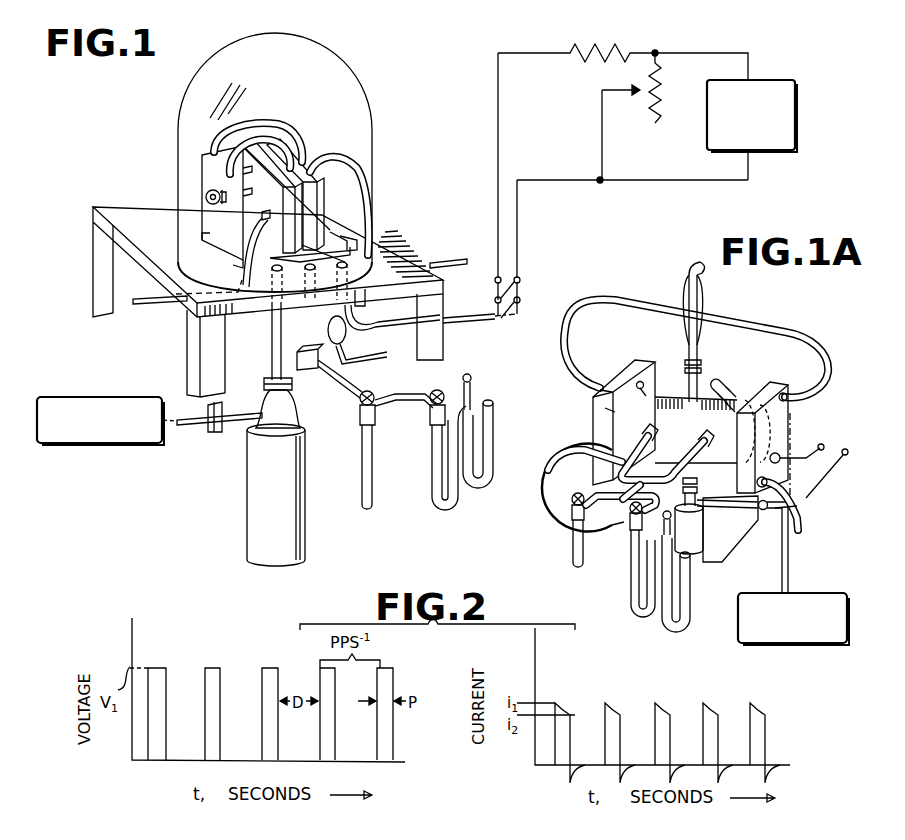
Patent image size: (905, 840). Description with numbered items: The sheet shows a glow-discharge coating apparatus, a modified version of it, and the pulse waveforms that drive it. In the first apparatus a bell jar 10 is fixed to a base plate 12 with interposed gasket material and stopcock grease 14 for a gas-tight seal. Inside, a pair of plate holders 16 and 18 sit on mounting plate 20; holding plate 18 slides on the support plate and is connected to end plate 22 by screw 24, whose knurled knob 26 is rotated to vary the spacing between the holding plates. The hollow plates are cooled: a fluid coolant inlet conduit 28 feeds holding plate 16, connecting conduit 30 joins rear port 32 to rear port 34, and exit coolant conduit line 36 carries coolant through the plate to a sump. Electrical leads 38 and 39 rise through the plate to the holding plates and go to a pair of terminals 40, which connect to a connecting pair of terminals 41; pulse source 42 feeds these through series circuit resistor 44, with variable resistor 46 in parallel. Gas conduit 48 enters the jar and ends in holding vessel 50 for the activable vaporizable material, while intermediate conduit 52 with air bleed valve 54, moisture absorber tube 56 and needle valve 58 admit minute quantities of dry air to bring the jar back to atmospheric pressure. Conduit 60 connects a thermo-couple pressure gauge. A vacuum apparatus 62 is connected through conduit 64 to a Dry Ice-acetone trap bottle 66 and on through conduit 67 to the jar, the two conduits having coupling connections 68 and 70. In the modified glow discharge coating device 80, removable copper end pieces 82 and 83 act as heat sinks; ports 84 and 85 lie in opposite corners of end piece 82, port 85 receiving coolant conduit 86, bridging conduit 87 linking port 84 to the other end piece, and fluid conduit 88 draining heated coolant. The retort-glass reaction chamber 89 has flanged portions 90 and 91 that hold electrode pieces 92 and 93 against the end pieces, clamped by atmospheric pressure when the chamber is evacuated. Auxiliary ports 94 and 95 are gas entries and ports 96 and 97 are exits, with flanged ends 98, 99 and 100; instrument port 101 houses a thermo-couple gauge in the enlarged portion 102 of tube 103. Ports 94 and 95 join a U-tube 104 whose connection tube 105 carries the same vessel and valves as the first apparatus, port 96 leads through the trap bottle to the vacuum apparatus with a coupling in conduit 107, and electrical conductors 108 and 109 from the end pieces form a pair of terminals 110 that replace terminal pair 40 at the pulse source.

In FIG. 1, the bell jar 10 is at (325, 68).
In FIG. 1, the base plate 12 is at (393, 250).
In FIG. 1, the gasket material and stopcock grease 14 is at (183, 266).
In FIG. 1, the holding plate 16 is at (362, 153).
In FIG. 1, the holding plate 18 is at (215, 134).
In FIG. 1, the mounting plate 20 is at (322, 228).
In FIG. 1, the end plate 22 is at (205, 170).
In FIG. 1, the screw 24 is at (262, 216).
In FIG. 1, the knurled knob 26 is at (206, 200).
In FIG. 1, the fluid coolant inlet conduit 28 is at (450, 266).
In FIG. 1, the connecting conduit 30 is at (300, 135).
In FIG. 1, the rear port 32 is at (296, 160).
In FIG. 1, the rear port 34 is at (225, 152).
In FIG. 1, the exit coolant conduit line 36 is at (163, 306).
In FIG. 1, the electrical lead 38 is at (460, 322).
In FIG. 1, the electrical lead 39 is at (462, 315).
In FIG. 1, the pair of terminals 40 is at (520, 300).
In FIG. 1, the connecting pair of terminals 41 is at (520, 278).
In FIG. 1, the pulse source 42 is at (783, 80).
In FIG. 1, the circuit resistor 44 is at (612, 45).
In FIG. 1, the variable resistor 46 is at (665, 92).
In FIG. 1, the gas conduit 48 is at (330, 402).
In FIG. 1, the holding vessel 50 is at (362, 470).
In FIG. 1A, the holding vessel 50 is at (573, 548).
In FIG. 1, the intermediate conduit 52 is at (397, 415).
In FIG. 1A, the intermediate conduit 52 is at (573, 498).
In FIG. 1, the air bleed valve 54 is at (432, 396).
In FIG. 1A, the air bleed valve 54 is at (630, 545).
In FIG. 1, the moisture absorber tube 56 is at (476, 488).
In FIG. 1A, the moisture absorber tube 56 is at (690, 605).
In FIG. 1, the needle valve 58 is at (474, 380).
In FIG. 1A, the needle valve 58 is at (686, 550).
In FIG. 1, the conduit 60 is at (338, 346).
In FIG. 1, the vacuum apparatus 62 is at (82, 444).
In FIG. 1A, the vacuum apparatus 62 is at (800, 643).
In FIG. 1, the conduit 64 is at (195, 427).
In FIG. 1, the Dry Ice-acetone trap bottle 66 is at (262, 493).
In FIG. 1A, the Dry Ice-acetone trap bottle 66 is at (700, 545).
In FIG. 1, the conduit 67 is at (271, 348).
In FIG. 1, the coupling connection 68 is at (214, 434).
In FIG. 1A, the coupling connection 68 is at (780, 520).
In FIG. 1, the coupling connection 70 is at (265, 386).
In FIG. 1A, the glow discharge coating device 80 is at (731, 364).
In FIG. 1A, the end piece 82 is at (790, 392).
In FIG. 1A, the end piece 83 is at (636, 363).
In FIG. 1A, the port 84 is at (790, 410).
In FIG. 1A, the port 85 is at (770, 482).
In FIG. 1A, the coolant conduit 86 is at (801, 533).
In FIG. 1A, the bridging conduit 87 is at (735, 306).
In FIG. 1A, the fluid conduit 88 is at (536, 490).
In FIG. 1A, the reaction chamber 89 is at (600, 390).
In FIG. 1A, the flanged portion 90 is at (737, 403).
In FIG. 1A, the flanged portion 91 is at (648, 384).
In FIG. 1A, the electrode piece 92 is at (800, 512).
In FIG. 1A, the electrode piece 93 is at (603, 413).
In FIG. 1A, the auxiliary port 94 is at (650, 452).
In FIG. 1A, the auxiliary port 95 is at (777, 454).
In FIG. 1A, the auxiliary port 96 is at (768, 528).
In FIG. 1A, the auxiliary port 97 is at (718, 398).
In FIG. 1A, the flanged end 98 is at (630, 440).
In FIG. 1A, the flanged end 99 is at (697, 445).
In FIG. 1A, the flanged end 100 is at (755, 545).
In FIG. 1A, the instrument port 101 is at (698, 372).
In FIG. 1A, the enlarged portion 102 is at (703, 304).
In FIG. 1A, the tube 103 is at (697, 268).
In FIG. 1A, the U-tube 104 is at (560, 458).
In FIG. 1A, the connection tube 105 is at (598, 497).
In FIG. 1A, the conduit 107 is at (790, 553).
In FIG. 1A, the electrical conductor 108 is at (822, 444).
In FIG. 1A, the electrical conductor 109 is at (547, 520).
In FIG. 1A, the pair of terminals 110 is at (850, 446).